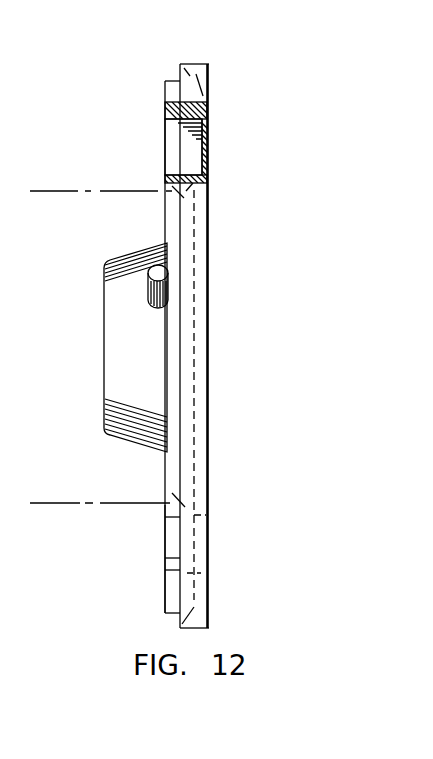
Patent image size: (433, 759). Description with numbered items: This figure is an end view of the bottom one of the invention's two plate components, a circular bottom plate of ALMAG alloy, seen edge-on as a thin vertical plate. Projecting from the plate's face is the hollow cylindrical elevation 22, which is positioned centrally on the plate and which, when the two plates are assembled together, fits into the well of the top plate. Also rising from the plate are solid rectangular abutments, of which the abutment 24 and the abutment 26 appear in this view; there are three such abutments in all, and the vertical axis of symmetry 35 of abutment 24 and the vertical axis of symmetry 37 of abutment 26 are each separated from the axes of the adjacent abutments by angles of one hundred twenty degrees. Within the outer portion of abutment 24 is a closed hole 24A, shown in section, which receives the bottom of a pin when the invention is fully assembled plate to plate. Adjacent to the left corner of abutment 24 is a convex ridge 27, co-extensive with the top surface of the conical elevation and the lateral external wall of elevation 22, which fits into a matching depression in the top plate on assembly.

The hollow cylindrical elevation 22 is at (103, 355).
The solid rectangular abutment 24 is at (167, 112).
The closed hole 24A is at (172, 154).
The solid rectangular abutment 26 is at (165, 588).
The convex ridge 27 is at (163, 273).
The vertical axis of symmetry 35 is at (50, 190).
The vertical axis of symmetry 37 is at (48, 503).